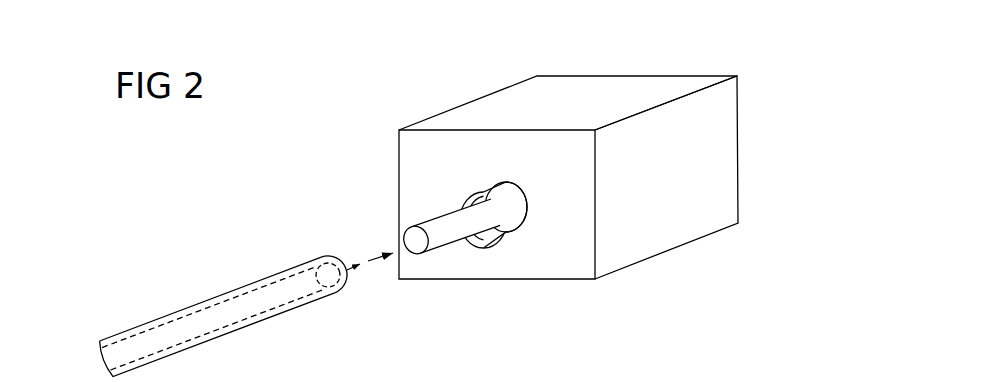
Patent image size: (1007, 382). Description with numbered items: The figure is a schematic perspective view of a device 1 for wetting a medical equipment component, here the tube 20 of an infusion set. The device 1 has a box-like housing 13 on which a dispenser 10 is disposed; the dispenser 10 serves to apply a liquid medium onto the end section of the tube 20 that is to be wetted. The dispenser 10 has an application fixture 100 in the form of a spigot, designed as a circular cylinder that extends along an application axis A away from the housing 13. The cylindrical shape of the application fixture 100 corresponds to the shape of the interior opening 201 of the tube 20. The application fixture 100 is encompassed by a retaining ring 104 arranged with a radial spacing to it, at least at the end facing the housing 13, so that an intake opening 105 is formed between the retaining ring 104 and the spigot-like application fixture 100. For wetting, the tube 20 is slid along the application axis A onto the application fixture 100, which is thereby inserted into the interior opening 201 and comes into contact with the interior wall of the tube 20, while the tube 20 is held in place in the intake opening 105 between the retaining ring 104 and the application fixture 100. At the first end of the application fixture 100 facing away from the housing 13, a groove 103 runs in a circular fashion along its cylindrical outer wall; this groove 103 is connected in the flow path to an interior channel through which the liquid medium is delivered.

The device 1 is at (597, 203).
The dispenser 10 is at (426, 241).
The housing 13 is at (653, 258).
The tube 20 is at (230, 283).
The application fixture 100 is at (415, 247).
The groove 103 is at (442, 248).
The retaining ring 104 is at (512, 225).
The intake opening 105 is at (467, 195).
The interior opening 201 is at (365, 263).
The application axis A is at (383, 265).